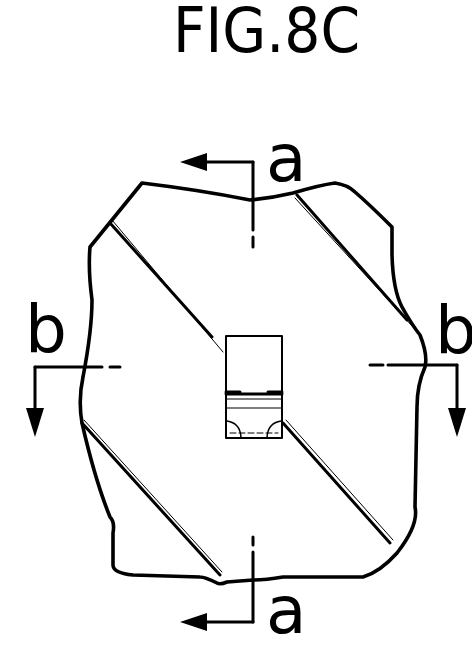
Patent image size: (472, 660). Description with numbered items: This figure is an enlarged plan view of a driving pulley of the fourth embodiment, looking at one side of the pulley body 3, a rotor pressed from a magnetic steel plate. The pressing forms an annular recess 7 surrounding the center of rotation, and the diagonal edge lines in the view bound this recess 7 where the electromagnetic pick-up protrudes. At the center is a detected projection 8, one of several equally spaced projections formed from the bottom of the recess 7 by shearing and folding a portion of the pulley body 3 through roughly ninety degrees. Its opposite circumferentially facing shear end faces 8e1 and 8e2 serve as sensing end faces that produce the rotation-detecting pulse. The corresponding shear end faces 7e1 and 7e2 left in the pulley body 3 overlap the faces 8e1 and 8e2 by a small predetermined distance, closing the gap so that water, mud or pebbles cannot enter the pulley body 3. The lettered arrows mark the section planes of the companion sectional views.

The pulley body 3 is at (106, 530).
The recess 7 is at (104, 256).
The detected projection 8 is at (250, 378).
The shear end face of projection 8e1 is at (281, 397).
The shear end face of projection 8e2 is at (228, 396).
The shear end face of pulley body 7e1 is at (263, 430).
The shear end face of pulley body 7e2 is at (241, 432).